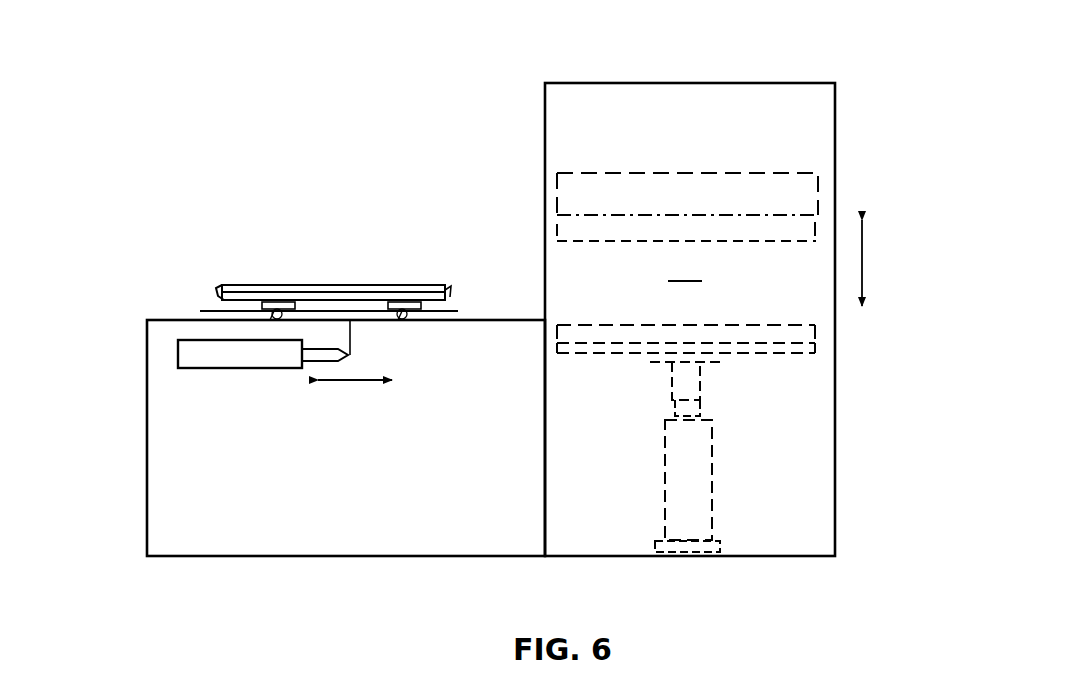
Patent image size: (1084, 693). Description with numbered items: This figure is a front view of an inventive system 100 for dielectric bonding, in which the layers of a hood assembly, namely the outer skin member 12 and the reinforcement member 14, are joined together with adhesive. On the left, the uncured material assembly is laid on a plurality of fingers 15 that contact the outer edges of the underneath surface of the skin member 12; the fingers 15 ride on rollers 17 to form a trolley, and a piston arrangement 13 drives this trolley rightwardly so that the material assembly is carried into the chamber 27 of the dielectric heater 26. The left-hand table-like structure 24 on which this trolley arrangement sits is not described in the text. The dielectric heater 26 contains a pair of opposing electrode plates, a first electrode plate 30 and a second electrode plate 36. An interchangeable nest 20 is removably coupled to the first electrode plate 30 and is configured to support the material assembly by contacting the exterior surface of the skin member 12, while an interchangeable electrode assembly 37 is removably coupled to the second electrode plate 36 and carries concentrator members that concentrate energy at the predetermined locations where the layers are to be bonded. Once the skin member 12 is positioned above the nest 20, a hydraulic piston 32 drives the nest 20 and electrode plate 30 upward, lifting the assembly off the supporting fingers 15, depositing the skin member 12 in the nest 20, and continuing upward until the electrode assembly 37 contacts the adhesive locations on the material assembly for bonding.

The system for dielectric bonding 100 is at (350, 128).
The outer skin member 12 is at (448, 296).
The piston arrangement 13 is at (228, 370).
The reinforcement member 14 is at (384, 292).
The fingers 15 is at (266, 308).
The rollers 17 is at (277, 320).
The interchangeable nest 20 is at (818, 336).
The table housing 24 is at (163, 475).
The dielectric heater 26 is at (840, 117).
The chamber 27 is at (686, 268).
The first electrode plate 30 is at (818, 356).
The hydraulic piston 32 is at (712, 490).
The second electrode plate 36 is at (838, 168).
The interchangeable electrode assembly 37 is at (815, 231).